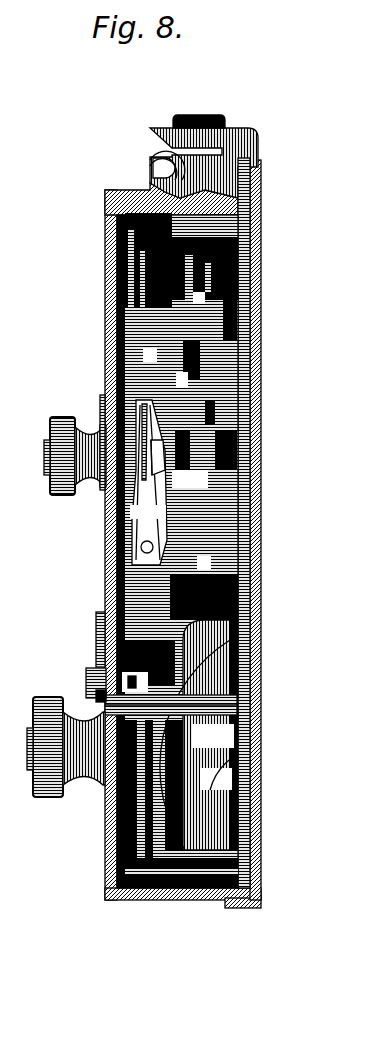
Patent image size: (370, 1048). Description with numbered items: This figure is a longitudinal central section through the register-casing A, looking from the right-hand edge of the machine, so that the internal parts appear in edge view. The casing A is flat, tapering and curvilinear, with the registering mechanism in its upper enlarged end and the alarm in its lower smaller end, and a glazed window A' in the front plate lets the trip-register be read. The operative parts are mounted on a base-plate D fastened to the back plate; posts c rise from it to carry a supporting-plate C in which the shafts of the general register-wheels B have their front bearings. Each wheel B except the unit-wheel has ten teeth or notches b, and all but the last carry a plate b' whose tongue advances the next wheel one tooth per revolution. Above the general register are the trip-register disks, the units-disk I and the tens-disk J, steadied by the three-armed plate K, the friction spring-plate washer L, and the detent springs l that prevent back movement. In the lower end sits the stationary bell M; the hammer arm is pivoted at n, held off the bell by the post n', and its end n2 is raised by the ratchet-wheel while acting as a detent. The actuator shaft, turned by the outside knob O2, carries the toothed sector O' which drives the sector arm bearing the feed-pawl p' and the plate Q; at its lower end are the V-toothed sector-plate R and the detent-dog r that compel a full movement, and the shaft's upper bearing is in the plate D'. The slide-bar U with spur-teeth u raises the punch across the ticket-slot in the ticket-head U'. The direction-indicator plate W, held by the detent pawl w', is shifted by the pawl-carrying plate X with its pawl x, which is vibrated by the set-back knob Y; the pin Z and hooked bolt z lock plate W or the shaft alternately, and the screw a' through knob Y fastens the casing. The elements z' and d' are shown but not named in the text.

The casing A is at (176, 541).
The window A' is at (86, 434).
The registering-wheels B is at (252, 326).
The supporting-plate C is at (152, 452).
The posts c is at (202, 431).
The base-plate D is at (196, 550).
The plate D' is at (171, 910).
The units-disk I is at (107, 315).
The tens-disk J is at (103, 272).
The three-armed plate K is at (157, 457).
The spring-plate washer L is at (146, 482).
The detent dogs or springs l is at (148, 512).
The bell M is at (197, 735).
The toothed sector O' is at (213, 772).
The knob or handle O2 is at (62, 755).
The plate Q is at (248, 658).
The sector-plate R is at (242, 748).
The shifting detent-dog r is at (250, 790).
The slide-bar U is at (253, 441).
The ticket-head U' is at (188, 156).
The spur-teeth u is at (219, 227).
The direction-indicator plate W is at (106, 852).
The detent dog or pawl w' is at (157, 750).
The pawl-carrying plate or arm X is at (102, 495).
The pawl x is at (140, 205).
The turning-knob Y is at (71, 445).
The pin or bolt Z is at (97, 698).
The sliding hooked end bolt z is at (88, 826).
The pin z' is at (105, 676).
The screw a' is at (35, 473).
The teeth or notches b is at (182, 380).
The plate b' is at (190, 479).
The pin d' is at (94, 601).
The pivot n is at (262, 585).
The post or projection n' is at (264, 607).
The end of hammer-arm n2 is at (248, 545).
The feed-pawl p' is at (89, 639).